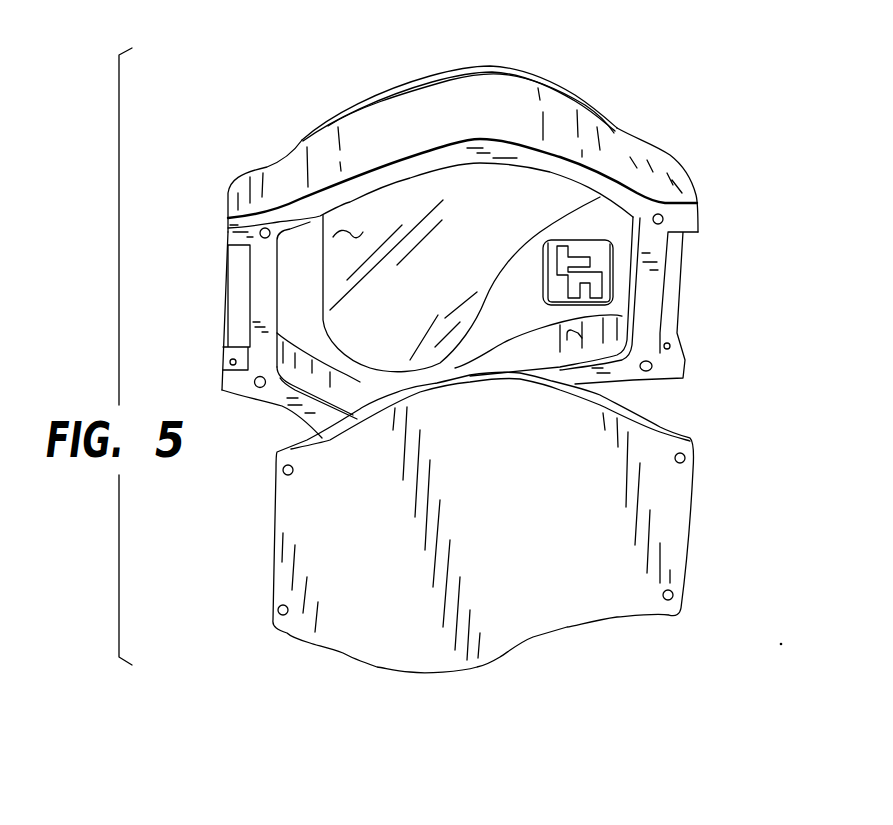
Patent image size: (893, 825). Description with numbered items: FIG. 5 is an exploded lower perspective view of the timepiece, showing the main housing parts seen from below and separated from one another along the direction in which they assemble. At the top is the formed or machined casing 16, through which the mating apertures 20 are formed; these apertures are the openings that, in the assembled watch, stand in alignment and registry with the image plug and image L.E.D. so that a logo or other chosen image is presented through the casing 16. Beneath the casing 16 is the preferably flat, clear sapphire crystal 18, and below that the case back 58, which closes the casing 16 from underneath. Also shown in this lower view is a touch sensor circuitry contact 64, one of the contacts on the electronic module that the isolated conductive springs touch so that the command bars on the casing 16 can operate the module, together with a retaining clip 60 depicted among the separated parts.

The casing 16 is at (475, 252).
The sapphire crystal 18 is at (348, 241).
The mating apertures 20 is at (602, 262).
The touch sensor circuitry contact 64 is at (627, 325).
The retaining clip 60 is at (572, 337).
The case back 58 is at (692, 497).